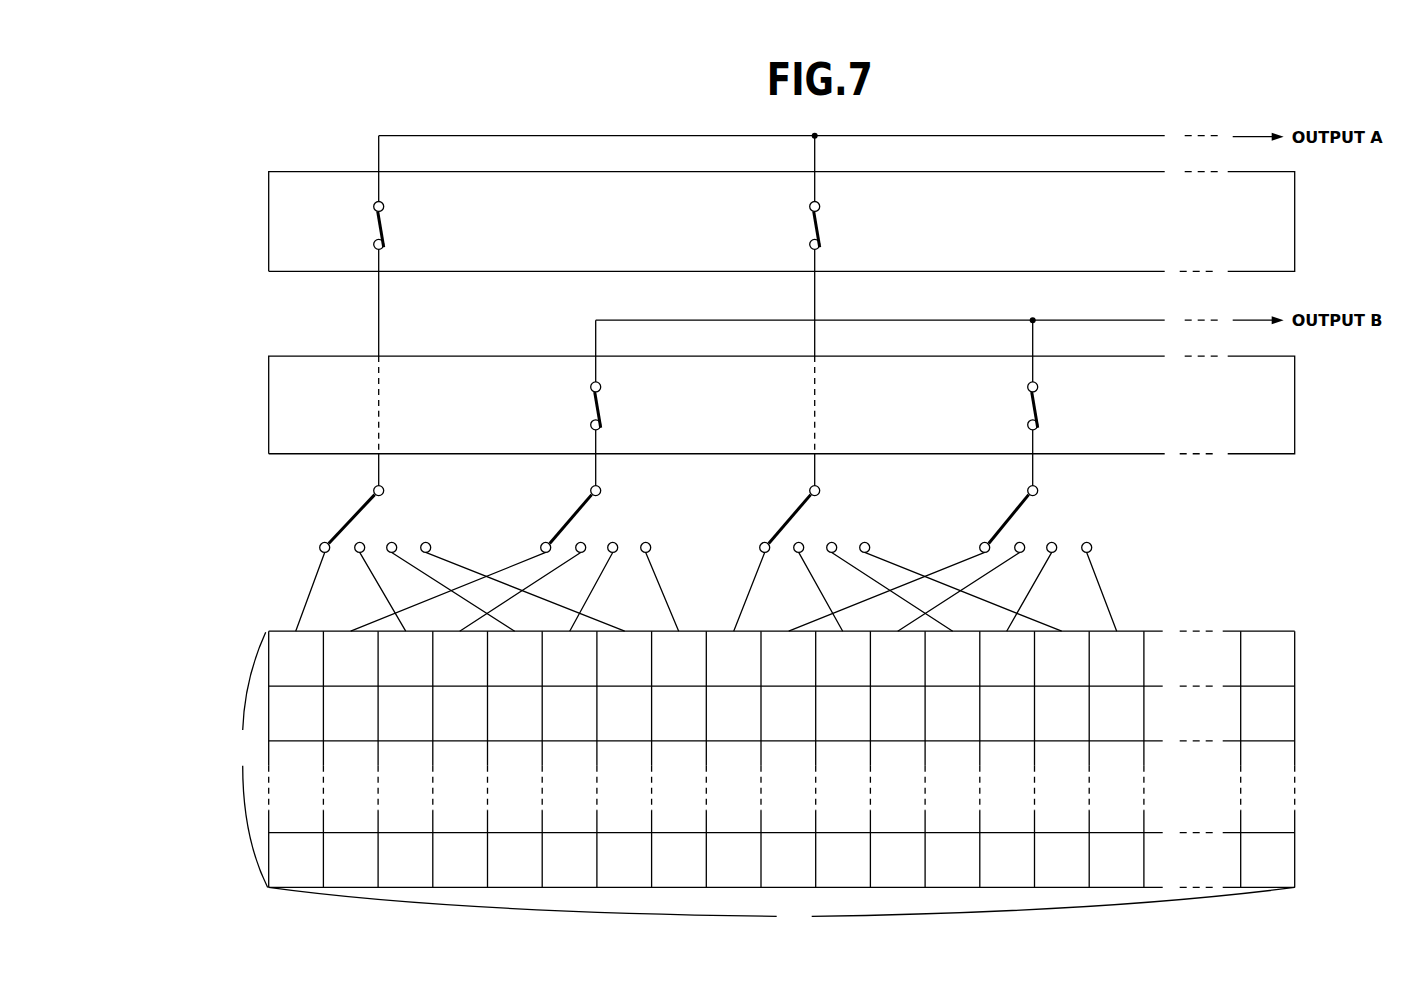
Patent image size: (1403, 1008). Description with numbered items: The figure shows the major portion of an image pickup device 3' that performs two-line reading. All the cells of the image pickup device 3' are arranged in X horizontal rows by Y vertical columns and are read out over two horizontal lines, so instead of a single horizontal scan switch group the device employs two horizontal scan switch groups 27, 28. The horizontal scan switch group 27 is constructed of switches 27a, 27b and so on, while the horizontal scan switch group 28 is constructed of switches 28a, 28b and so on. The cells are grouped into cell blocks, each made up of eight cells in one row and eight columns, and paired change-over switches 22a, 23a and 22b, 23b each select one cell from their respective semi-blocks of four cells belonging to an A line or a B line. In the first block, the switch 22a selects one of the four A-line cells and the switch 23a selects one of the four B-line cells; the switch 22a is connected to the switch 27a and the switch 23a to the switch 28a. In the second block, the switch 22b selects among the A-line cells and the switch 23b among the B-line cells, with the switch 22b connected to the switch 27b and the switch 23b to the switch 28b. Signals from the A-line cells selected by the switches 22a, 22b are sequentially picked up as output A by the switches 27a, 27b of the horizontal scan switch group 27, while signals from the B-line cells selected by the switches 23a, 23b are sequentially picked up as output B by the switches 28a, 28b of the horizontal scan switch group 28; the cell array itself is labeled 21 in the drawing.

The image pickup device 3' is at (208, 122).
The horizontal scan switch group 27 is at (322, 172).
The switch 27a is at (393, 243).
The switch 27b is at (829, 243).
The horizontal scan switch group 28 is at (322, 357).
The switch 28a is at (610, 424).
The switch 28b is at (1047, 424).
The change-over switch 22a is at (402, 520).
The change-over switch 22b is at (830, 520).
The change-over switch 23a is at (614, 520).
The change-over switch 23b is at (1057, 520).
The pixel array 21 is at (1296, 660).